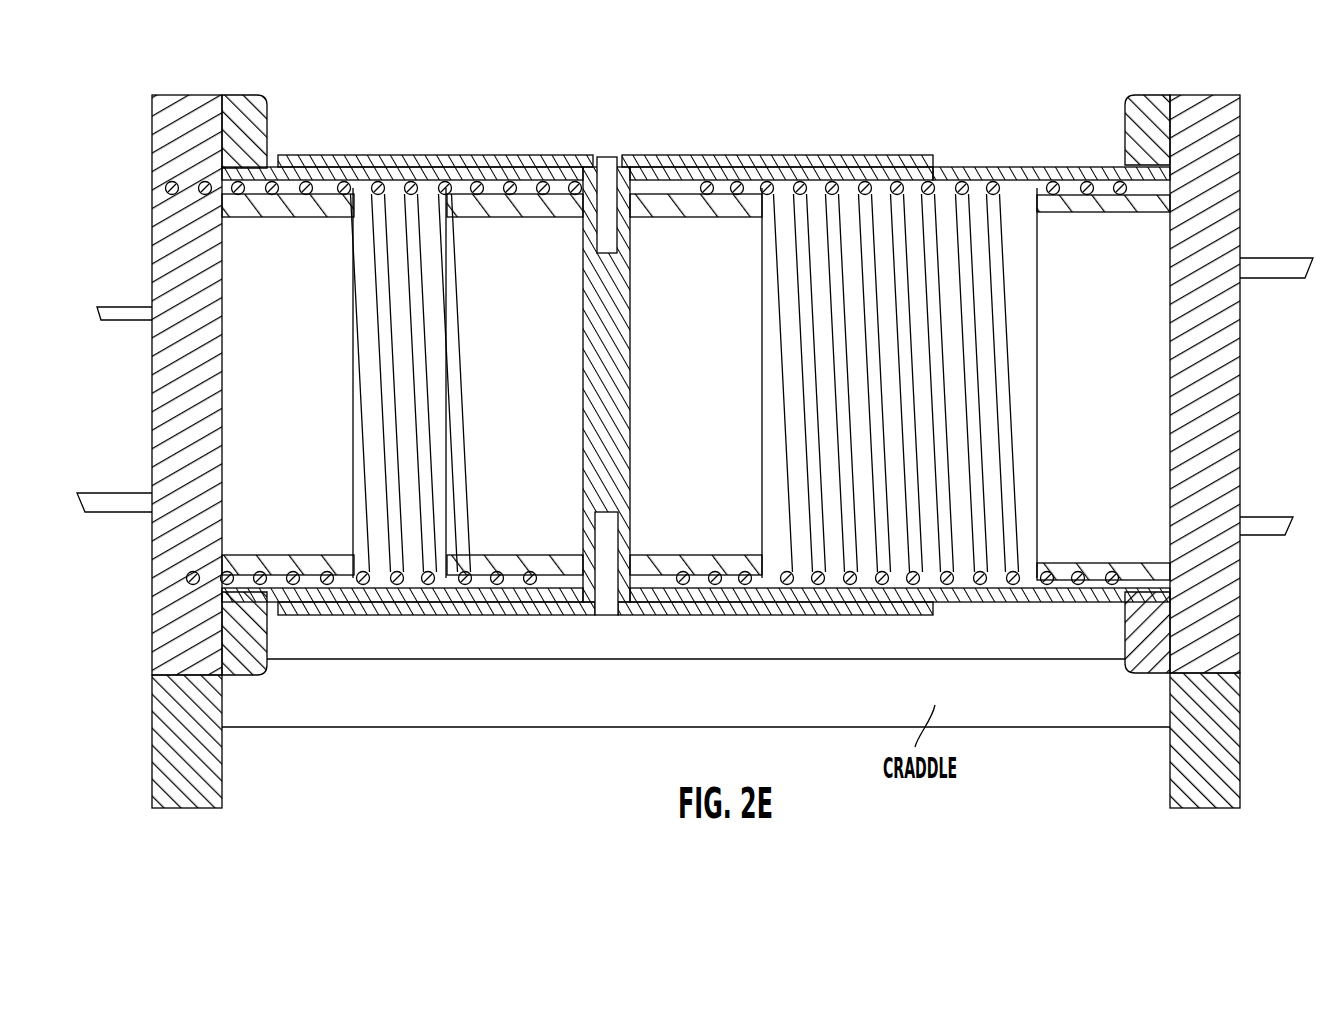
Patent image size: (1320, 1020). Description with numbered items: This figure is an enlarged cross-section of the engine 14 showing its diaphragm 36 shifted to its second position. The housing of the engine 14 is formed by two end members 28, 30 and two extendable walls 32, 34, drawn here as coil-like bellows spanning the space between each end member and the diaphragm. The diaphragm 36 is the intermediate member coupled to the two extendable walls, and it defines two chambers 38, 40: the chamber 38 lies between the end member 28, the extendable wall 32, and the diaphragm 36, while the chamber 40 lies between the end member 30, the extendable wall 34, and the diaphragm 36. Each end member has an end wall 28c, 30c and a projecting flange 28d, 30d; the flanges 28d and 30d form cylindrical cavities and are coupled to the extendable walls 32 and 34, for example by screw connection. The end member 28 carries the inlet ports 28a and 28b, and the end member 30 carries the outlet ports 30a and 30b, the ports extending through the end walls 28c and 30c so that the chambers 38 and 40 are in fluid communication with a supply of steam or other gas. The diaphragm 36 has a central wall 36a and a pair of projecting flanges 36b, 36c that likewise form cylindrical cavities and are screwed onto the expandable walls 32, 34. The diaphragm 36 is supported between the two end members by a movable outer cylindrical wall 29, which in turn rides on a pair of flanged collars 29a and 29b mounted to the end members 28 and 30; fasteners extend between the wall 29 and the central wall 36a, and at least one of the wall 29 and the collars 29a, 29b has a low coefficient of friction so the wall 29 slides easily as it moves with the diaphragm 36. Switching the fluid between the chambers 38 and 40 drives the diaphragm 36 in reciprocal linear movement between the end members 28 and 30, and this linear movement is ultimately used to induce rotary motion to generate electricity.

The engine 14 is at (1068, 95).
The end member 28 is at (152, 140).
The inlet port 28a is at (107, 500).
The inlet port 28b is at (137, 312).
The end wall 28c is at (178, 260).
The projecting flange 28d is at (245, 562).
The outer cylindrical wall 29 is at (662, 153).
The flanged collar 29a is at (342, 167).
The flanged collar 29b is at (970, 167).
The end member 30 is at (1240, 148).
The outlet port 30a is at (1255, 520).
The outlet port 30b is at (1253, 258).
The end wall 30c is at (1215, 440).
The projecting flange 30d is at (1100, 200).
The extendable wall 32 is at (445, 180).
The extendable wall 34 is at (887, 180).
The diaphragm 36 is at (637, 222).
The central wall 36a is at (622, 440).
The divider left band 36b is at (553, 567).
The divider right band 36c is at (655, 567).
The chamber 38 is at (507, 479).
The chamber 40 is at (1100, 532).